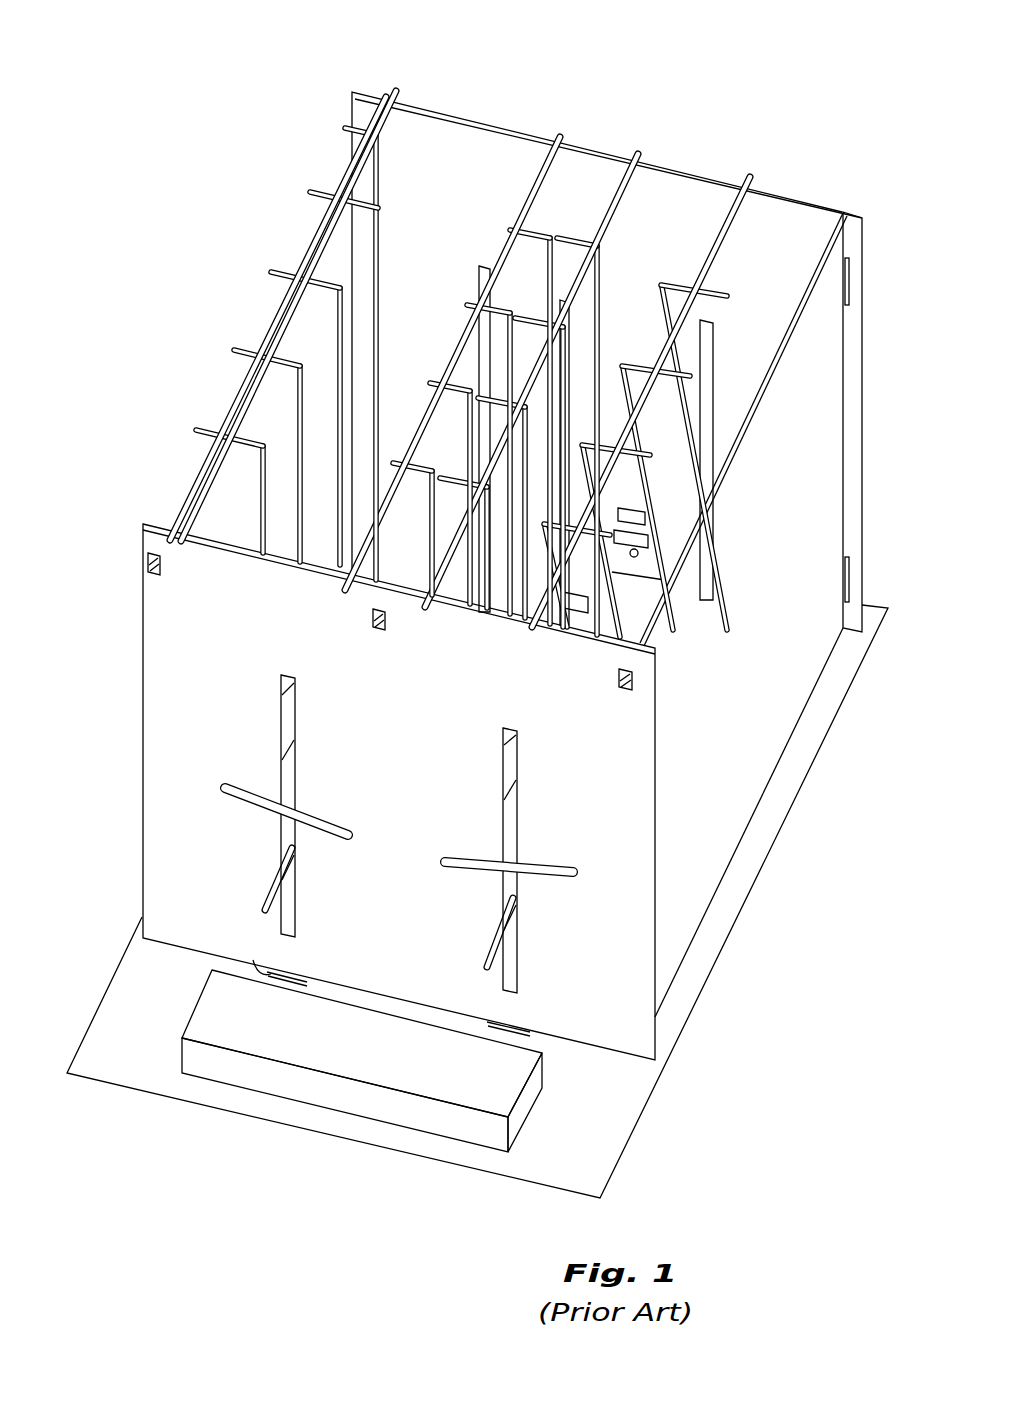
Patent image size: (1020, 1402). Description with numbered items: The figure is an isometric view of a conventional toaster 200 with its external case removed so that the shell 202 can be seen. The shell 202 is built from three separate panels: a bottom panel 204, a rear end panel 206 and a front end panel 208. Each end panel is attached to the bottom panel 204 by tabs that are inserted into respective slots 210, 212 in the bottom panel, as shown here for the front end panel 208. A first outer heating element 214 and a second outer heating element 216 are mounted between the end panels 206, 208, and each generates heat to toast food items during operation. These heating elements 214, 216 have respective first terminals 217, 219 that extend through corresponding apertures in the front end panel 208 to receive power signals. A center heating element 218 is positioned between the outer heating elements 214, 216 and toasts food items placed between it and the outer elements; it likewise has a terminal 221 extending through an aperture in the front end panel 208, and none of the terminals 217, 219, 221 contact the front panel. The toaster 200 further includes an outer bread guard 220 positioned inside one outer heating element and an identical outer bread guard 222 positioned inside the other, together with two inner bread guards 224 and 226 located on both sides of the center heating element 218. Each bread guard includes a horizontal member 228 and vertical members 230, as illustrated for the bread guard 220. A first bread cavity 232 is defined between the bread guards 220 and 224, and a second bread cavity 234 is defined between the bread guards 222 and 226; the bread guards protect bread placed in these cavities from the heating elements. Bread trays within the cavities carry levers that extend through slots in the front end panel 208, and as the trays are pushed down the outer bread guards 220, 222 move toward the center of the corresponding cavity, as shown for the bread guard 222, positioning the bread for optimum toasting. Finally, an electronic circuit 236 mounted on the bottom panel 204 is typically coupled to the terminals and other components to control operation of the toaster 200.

The toaster 200 is at (410, 52).
The shell 202 is at (203, 232).
The bottom panel 204 is at (730, 895).
The rear end panel 206 is at (860, 275).
The front end panel 208 is at (170, 650).
The slot 210 is at (256, 964).
The slot 212 is at (700, 175).
The first outer heating element 214 is at (220, 520).
The second outer heating element 216 is at (783, 672).
The first terminal 217 is at (158, 576).
The center heating element 218 is at (500, 380).
The first terminal 219 is at (622, 691).
The outer bread guard 220 is at (239, 334).
The terminal 221 is at (383, 630).
The outer bread guard 222 is at (752, 176).
The inner bread guard 224 is at (561, 135).
The inner bread guard 226 is at (639, 152).
The horizontal member 228 is at (288, 325).
The vertical members 230 is at (243, 360).
The first bread cavity 232 is at (445, 526).
The second bread cavity 234 is at (621, 272).
The electronic circuit 236 is at (212, 1010).